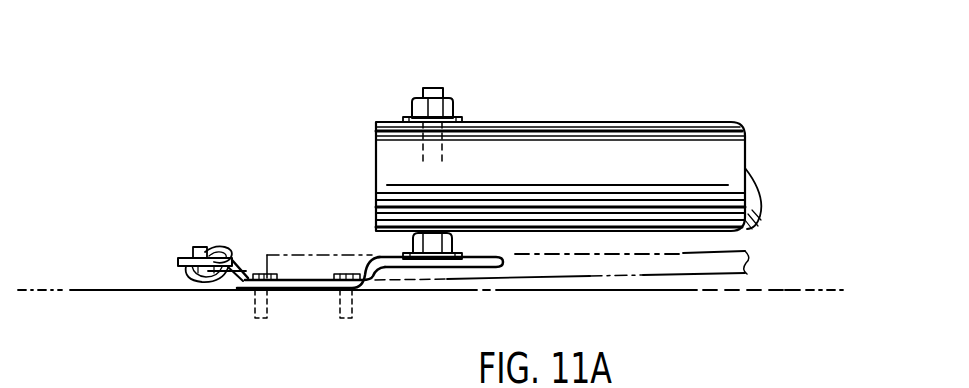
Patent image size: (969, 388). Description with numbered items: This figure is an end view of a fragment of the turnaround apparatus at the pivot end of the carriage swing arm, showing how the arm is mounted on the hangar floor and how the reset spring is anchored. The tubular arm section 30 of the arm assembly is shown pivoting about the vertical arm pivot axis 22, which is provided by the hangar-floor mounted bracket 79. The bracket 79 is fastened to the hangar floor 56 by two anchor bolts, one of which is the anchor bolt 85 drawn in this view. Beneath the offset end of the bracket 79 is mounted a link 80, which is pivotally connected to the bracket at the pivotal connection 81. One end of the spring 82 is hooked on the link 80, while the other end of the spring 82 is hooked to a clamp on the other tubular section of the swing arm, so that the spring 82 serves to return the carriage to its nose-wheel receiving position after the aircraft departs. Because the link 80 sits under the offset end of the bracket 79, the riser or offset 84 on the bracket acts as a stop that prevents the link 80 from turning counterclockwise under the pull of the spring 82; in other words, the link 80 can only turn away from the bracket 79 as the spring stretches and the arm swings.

The arm pivot axis 22 is at (440, 90).
The tubular arm section 30 is at (622, 140).
The hangar floor 56 is at (792, 290).
The hangar-floor mounted bracket 79 is at (301, 297).
The link 80 is at (185, 272).
The pivotal connection 81 is at (215, 250).
The spring 82 is at (733, 275).
The riser or offset 84 is at (243, 272).
The anchor bolt 85 is at (355, 302).